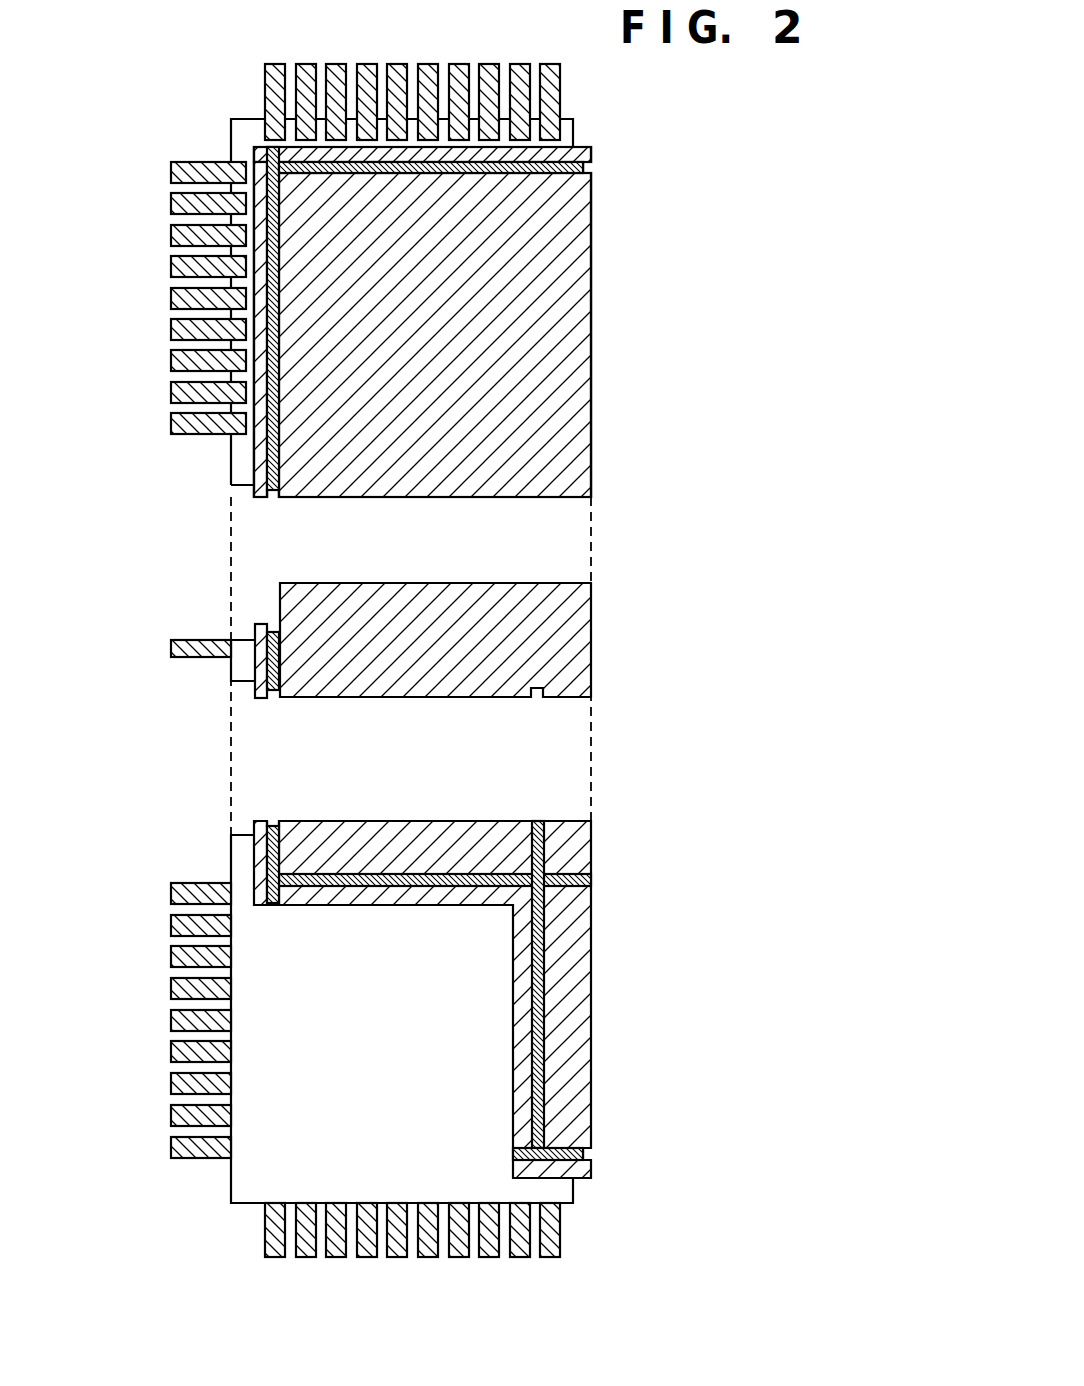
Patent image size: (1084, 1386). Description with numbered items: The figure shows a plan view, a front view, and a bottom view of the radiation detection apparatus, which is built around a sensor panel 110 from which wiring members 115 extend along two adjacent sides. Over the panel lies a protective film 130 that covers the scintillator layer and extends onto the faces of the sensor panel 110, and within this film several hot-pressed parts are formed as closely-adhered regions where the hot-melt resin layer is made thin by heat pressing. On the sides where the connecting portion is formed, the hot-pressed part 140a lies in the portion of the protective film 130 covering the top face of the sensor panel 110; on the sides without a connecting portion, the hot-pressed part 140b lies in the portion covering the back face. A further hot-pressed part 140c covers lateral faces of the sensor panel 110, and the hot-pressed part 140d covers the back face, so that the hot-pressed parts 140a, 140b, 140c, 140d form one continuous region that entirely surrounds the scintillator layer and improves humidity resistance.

The sensor panel 110 is at (243, 133).
The wiring members 115 is at (272, 66).
The protective film 130 is at (586, 312).
The hot-pressed part 140a is at (583, 170).
The hot-pressed part 140b is at (405, 876).
The hot-pressed part 140c is at (270, 692).
The hot-pressed part 140d is at (273, 825).